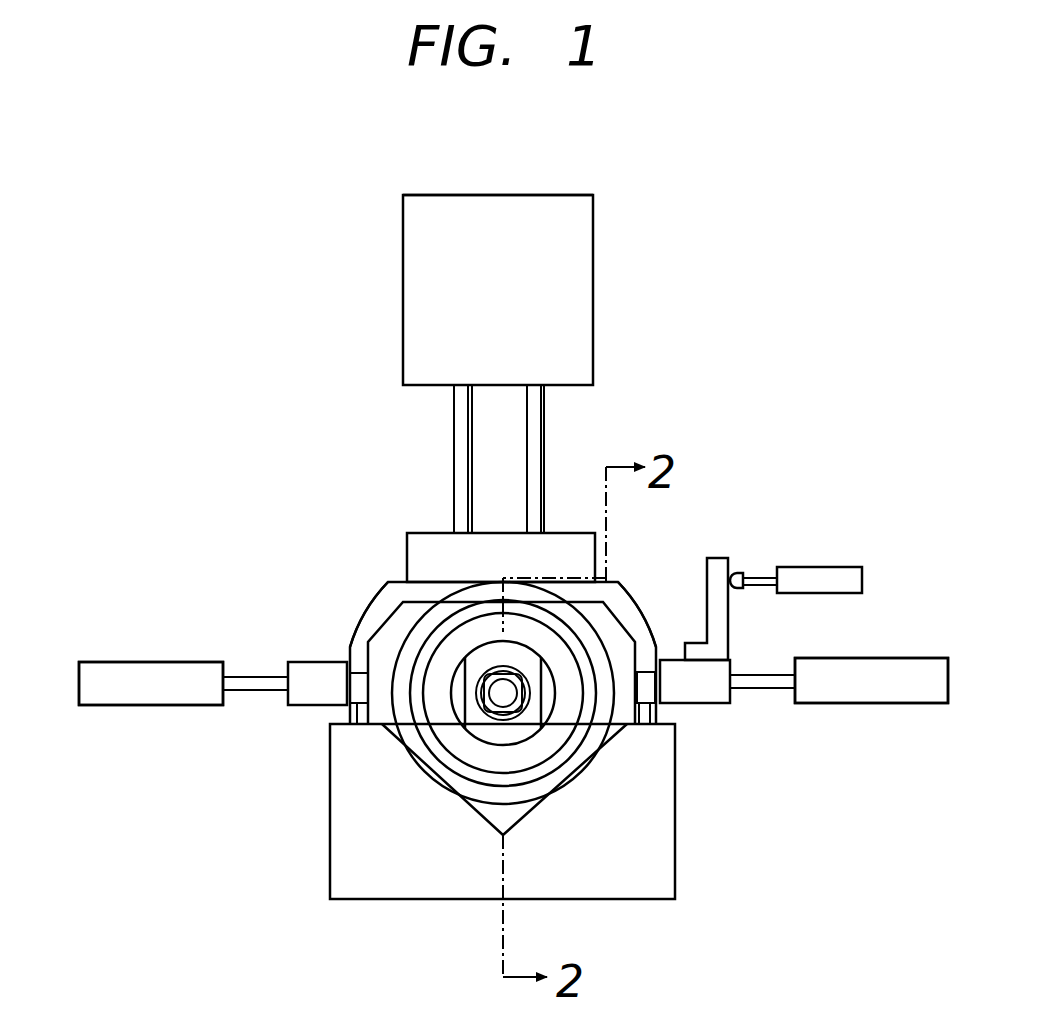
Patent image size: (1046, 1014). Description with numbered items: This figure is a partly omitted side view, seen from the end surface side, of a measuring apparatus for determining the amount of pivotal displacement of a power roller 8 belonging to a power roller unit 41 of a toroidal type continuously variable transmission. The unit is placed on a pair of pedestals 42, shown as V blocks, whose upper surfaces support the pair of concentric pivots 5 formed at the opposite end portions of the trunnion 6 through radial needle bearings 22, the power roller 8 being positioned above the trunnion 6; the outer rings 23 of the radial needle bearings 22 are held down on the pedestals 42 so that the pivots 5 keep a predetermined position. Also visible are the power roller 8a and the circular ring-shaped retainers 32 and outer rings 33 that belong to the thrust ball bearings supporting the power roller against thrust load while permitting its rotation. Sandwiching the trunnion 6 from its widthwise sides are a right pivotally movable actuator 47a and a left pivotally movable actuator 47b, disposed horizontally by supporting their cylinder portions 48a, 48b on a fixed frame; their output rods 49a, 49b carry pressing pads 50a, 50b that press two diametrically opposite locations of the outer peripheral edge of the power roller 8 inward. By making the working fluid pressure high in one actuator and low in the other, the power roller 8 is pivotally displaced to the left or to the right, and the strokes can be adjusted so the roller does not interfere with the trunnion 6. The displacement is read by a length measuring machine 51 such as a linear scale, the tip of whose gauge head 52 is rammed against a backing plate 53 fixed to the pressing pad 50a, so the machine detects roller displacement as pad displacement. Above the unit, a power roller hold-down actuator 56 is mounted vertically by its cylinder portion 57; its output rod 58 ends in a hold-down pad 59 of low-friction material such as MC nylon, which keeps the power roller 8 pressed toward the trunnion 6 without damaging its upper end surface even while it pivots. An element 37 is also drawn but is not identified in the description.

The pivot 5 is at (458, 742).
The trunnion 6 is at (493, 818).
The power roller 8 is at (627, 605).
The power roller 8a is at (650, 623).
The radial needle bearing 22 is at (418, 655).
The outer ring 23 is at (445, 612).
The retainer 32 is at (360, 693).
The outer ring 33 is at (645, 712).
The center shaft 37 is at (528, 697).
The power roller unit 41 is at (374, 582).
The pedestal 42 is at (657, 885).
The right pivotally movable actuator 47a is at (867, 667).
The left pivotally movable actuator 47b is at (128, 677).
The cylinder portion 48a is at (897, 690).
The cylinder portion 48b is at (152, 693).
The output rod 49a is at (775, 682).
The output rod 49b is at (245, 682).
The pressing pad 50a is at (710, 697).
The pressing pad 50b is at (303, 695).
The length measuring machine 51 is at (815, 577).
The gauge head 52 is at (745, 574).
The backing plate 53 is at (713, 565).
The power roller hold-down actuator 56 is at (580, 240).
The cylinder portion 57 is at (474, 200).
The output rod 58 is at (535, 460).
The hold-down pad 59 is at (550, 543).